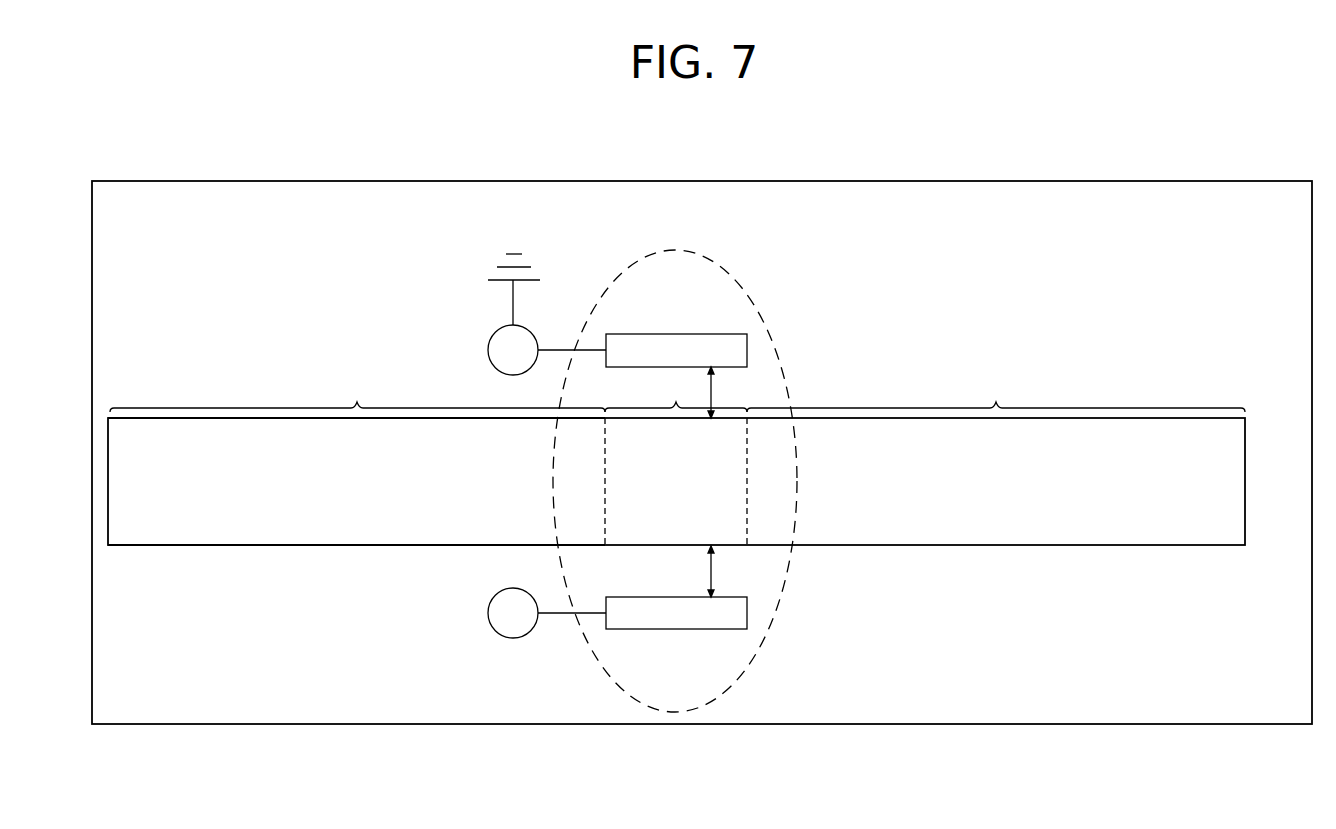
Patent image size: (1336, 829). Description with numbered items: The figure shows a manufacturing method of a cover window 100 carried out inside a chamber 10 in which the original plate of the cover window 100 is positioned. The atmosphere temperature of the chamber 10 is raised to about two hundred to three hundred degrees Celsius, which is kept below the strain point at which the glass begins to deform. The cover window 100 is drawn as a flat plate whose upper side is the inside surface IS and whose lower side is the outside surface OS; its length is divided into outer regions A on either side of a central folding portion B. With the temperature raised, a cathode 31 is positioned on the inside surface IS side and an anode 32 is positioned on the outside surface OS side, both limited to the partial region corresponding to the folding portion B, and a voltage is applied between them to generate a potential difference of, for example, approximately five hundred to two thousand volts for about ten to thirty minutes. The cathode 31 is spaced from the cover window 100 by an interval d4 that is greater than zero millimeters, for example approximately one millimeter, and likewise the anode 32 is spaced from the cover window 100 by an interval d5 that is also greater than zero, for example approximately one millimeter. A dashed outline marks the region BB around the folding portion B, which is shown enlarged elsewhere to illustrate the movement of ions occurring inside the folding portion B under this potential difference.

The chamber 10 is at (923, 181).
The cover window 100 is at (1234, 491).
The cathode 31 is at (676, 334).
The anode 32 is at (677, 630).
The region A of substrate A is at (677, 393).
The folding portion B is at (676, 393).
The region BB is at (662, 250).
The inside surface IS is at (263, 418).
The outside surface OS is at (257, 548).
The interval between cathode and cover window d4 is at (725, 392).
The interval between anode and cover window d5 is at (725, 571).